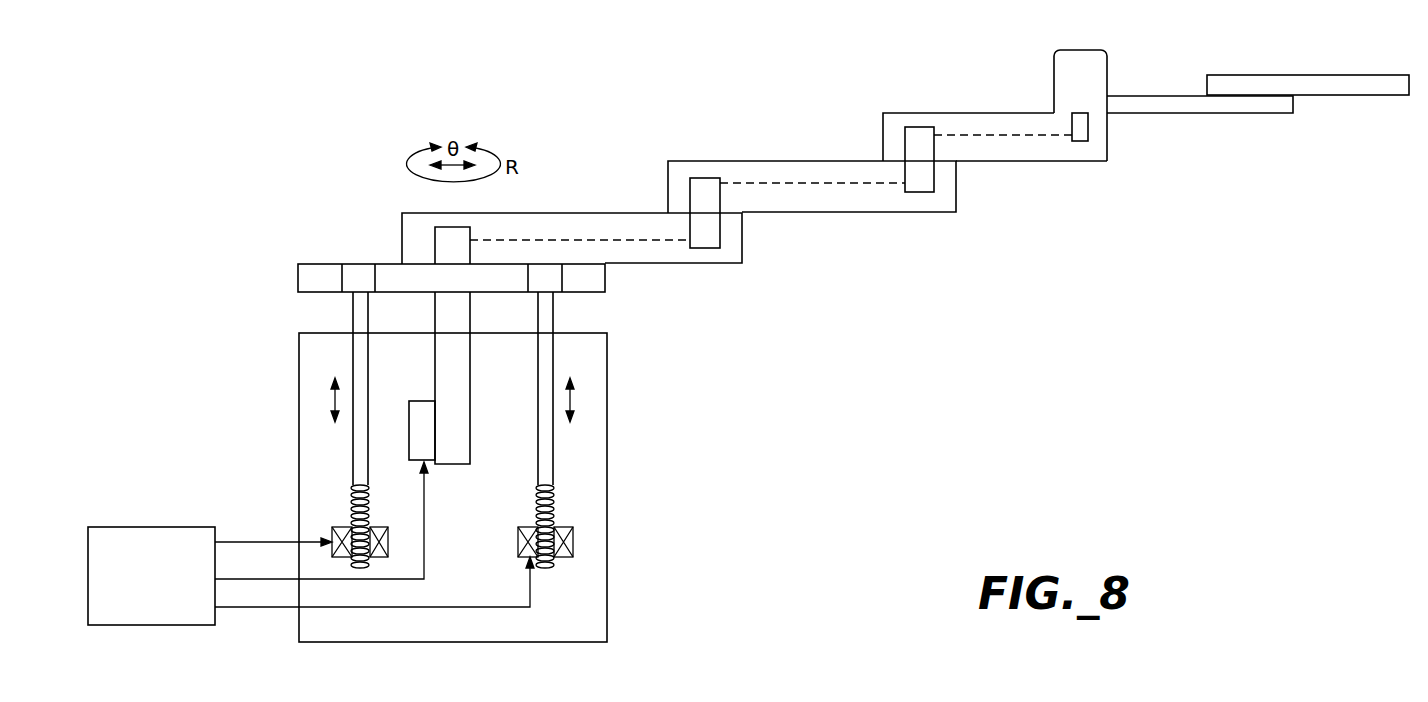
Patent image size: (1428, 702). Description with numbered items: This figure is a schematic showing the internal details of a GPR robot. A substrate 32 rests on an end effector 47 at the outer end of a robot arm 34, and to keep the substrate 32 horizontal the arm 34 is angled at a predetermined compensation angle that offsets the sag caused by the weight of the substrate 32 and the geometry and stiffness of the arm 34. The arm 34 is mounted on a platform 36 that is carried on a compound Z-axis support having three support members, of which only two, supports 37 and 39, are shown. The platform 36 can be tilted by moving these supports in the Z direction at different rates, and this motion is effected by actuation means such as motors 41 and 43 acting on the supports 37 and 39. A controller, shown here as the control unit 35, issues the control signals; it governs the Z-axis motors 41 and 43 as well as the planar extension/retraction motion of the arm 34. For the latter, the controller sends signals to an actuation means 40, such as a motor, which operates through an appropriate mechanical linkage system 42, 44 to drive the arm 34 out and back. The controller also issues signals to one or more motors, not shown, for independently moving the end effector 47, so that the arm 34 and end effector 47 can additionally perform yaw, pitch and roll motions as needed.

The substrate 32 is at (1328, 75).
The arm 34 is at (705, 135).
The controller 35 is at (178, 527).
The platform 36 is at (312, 264).
The support 37 is at (352, 455).
The support 39 is at (553, 450).
The actuation means 40 is at (427, 400).
The motor 41 is at (328, 535).
The mechanical linkage system 42 is at (458, 363).
The motor 43 is at (573, 540).
The mechanical linkage system 44 is at (668, 240).
The end effector 47 is at (1080, 50).